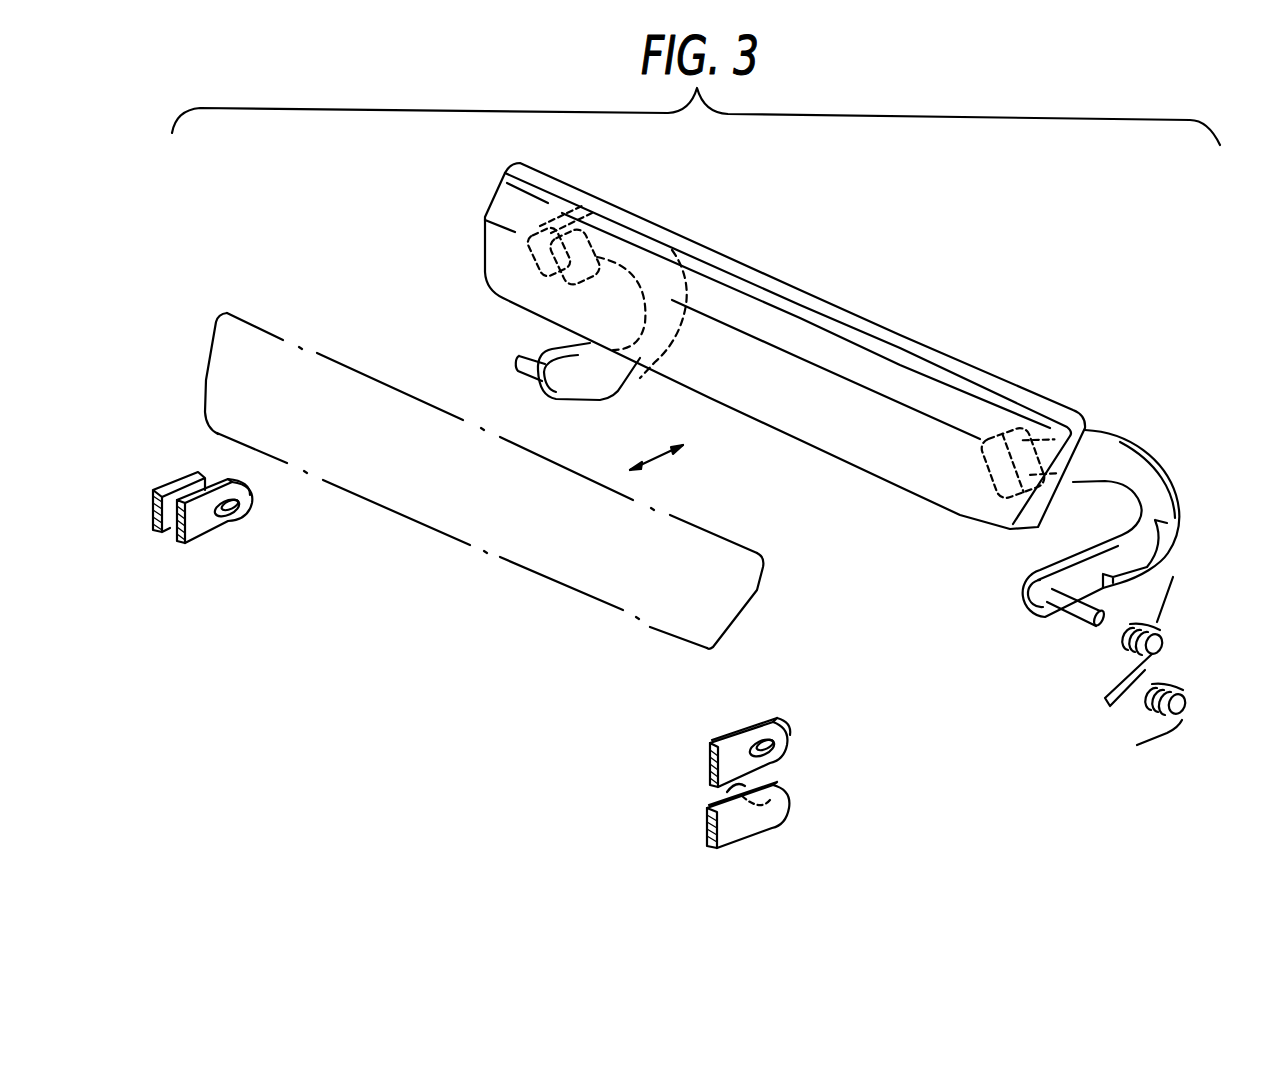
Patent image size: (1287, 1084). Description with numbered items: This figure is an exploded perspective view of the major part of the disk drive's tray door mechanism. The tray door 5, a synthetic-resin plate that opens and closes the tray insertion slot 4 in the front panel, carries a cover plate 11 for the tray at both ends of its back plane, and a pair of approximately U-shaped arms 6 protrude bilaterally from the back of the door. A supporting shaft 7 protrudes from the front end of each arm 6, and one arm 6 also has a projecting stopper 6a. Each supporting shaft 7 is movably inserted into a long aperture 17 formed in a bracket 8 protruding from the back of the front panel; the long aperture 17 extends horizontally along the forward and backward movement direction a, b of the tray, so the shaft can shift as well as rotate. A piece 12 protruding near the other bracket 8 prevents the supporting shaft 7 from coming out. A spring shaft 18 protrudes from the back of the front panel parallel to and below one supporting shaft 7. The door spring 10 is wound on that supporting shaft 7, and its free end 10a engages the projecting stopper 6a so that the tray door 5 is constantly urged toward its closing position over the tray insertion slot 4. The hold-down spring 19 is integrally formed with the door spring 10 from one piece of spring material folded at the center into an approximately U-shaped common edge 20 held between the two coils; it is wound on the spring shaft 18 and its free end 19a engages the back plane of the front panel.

The tray insertion slot 4 is at (433, 529).
The tray door 5 is at (813, 430).
The arms 6 is at (590, 376).
The projecting stopper 6a is at (1162, 521).
The supporting shafts 7 is at (515, 360).
The brackets 8 is at (200, 525).
The door spring 10 is at (1125, 647).
The free end of the door spring 10a is at (1163, 607).
The cover plate 11 is at (587, 273).
The piece for preventing removal of the supporting shaft 12 is at (180, 482).
The long aperture 17 is at (230, 515).
The spring shaft 18 is at (727, 792).
The hold-down spring 19 is at (1184, 697).
The free end of the hold-down spring 19a is at (1160, 742).
The common edge 20 is at (1106, 702).
The forward direction a is at (644, 467).
The backward direction b is at (686, 440).